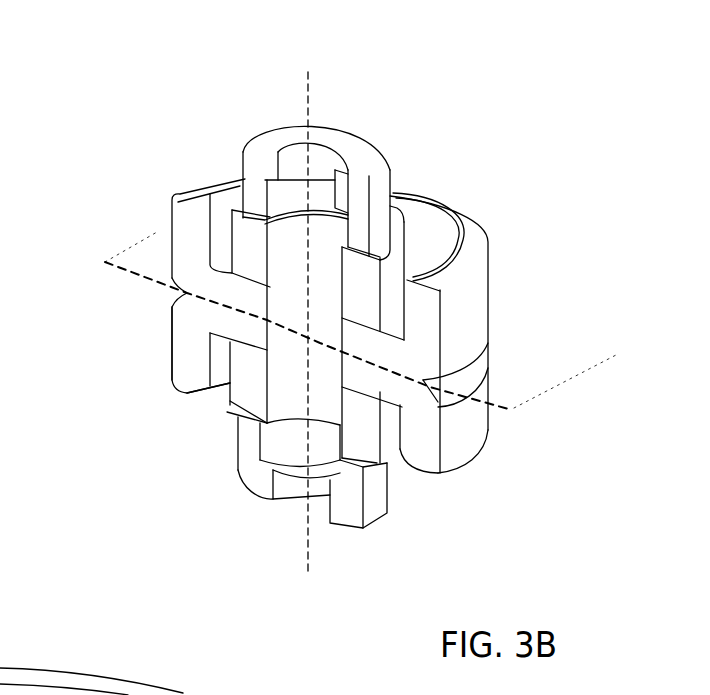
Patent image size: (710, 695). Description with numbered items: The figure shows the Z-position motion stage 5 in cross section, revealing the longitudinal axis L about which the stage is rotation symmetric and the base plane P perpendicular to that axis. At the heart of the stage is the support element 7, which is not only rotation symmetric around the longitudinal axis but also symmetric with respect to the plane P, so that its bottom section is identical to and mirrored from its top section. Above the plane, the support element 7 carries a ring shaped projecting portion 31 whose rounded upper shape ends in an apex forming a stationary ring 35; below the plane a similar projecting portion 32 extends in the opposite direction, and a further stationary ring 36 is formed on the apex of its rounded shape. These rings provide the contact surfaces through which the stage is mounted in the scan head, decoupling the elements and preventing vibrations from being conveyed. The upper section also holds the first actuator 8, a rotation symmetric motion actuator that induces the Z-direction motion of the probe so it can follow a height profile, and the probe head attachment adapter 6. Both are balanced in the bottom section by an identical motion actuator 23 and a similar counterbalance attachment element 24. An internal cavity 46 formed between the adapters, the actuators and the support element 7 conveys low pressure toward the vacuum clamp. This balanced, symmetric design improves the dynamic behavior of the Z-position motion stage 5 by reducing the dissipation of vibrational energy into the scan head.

The Z-position motion stage 5 is at (609, 278).
The probe head attachment adapter 6 is at (253, 157).
The support element 7 is at (180, 328).
The first actuator 8 is at (240, 221).
The motion actuator 23 is at (230, 405).
The counterbalance attachment element 24 is at (248, 478).
The ring shaped projecting portion 31 is at (187, 217).
The projecting portion 32 is at (177, 372).
The stationary ring 35 is at (213, 210).
The stationary ring 36 is at (187, 394).
The internal cavity 46 is at (281, 428).